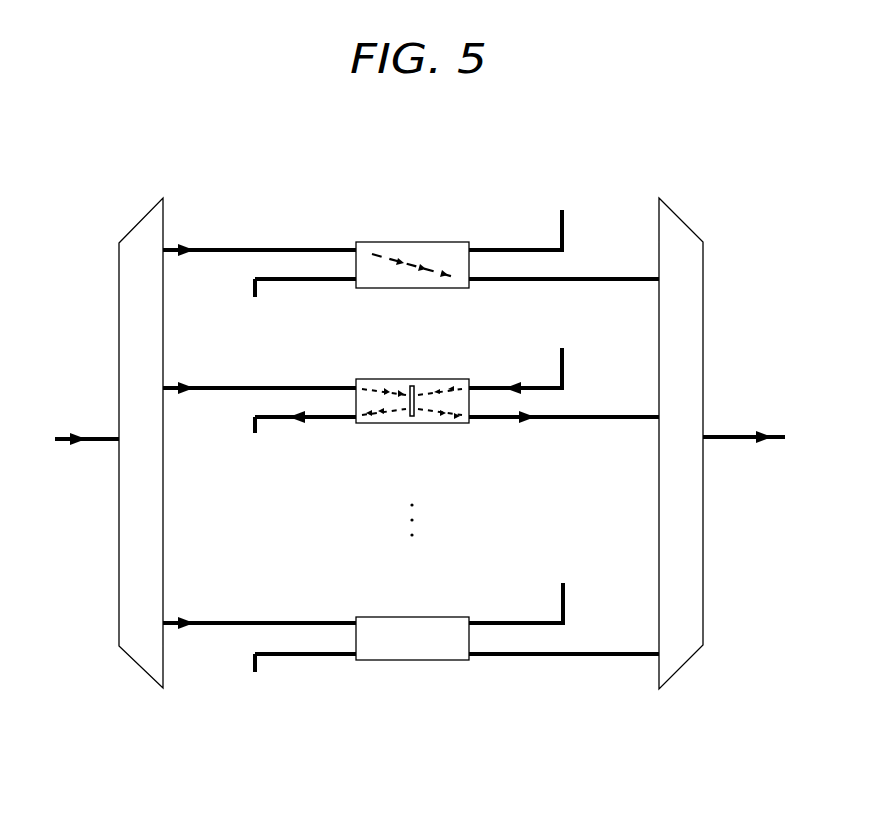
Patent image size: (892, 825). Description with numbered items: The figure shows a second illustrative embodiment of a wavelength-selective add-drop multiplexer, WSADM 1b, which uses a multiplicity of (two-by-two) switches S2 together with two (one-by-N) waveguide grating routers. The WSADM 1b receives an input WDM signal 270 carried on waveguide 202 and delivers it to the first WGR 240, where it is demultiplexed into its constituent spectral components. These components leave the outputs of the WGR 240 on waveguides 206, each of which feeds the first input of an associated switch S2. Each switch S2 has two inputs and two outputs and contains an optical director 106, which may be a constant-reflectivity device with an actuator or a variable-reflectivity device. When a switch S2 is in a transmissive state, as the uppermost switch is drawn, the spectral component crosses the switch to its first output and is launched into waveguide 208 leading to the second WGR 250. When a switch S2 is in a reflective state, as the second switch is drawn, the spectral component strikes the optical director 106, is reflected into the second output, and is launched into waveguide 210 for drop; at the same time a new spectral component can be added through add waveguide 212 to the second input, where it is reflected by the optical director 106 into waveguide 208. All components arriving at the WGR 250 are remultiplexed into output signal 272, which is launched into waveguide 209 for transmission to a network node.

The wavelength-selective add-drop multiplexer (WSADM) 1b is at (526, 138).
The (1×N) WGR 240 is at (159, 450).
The second (1×N) WGR 250 is at (700, 450).
The WDM signal 270 is at (76, 436).
The waveguide 202 is at (102, 442).
The remultiplexed signal 272 is at (761, 432).
The waveguide 209 is at (726, 440).
The waveguide 206 is at (266, 248).
The waveguide 210 is at (308, 684).
The add waveguide 212 is at (568, 216).
The waveguide 208 is at (608, 276).
The (2×2) switch S2 is at (413, 415).
The optical director 106 is at (406, 426).